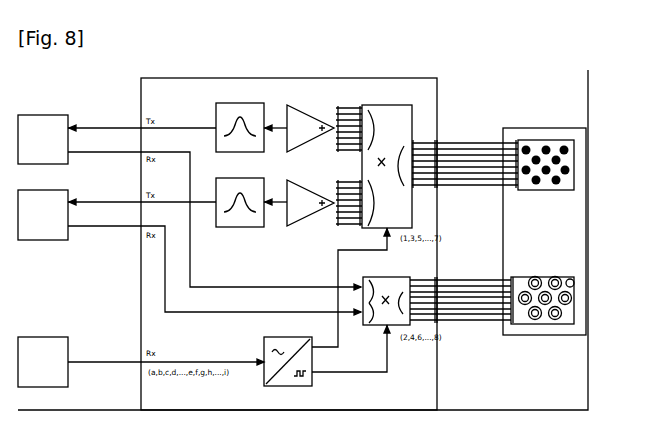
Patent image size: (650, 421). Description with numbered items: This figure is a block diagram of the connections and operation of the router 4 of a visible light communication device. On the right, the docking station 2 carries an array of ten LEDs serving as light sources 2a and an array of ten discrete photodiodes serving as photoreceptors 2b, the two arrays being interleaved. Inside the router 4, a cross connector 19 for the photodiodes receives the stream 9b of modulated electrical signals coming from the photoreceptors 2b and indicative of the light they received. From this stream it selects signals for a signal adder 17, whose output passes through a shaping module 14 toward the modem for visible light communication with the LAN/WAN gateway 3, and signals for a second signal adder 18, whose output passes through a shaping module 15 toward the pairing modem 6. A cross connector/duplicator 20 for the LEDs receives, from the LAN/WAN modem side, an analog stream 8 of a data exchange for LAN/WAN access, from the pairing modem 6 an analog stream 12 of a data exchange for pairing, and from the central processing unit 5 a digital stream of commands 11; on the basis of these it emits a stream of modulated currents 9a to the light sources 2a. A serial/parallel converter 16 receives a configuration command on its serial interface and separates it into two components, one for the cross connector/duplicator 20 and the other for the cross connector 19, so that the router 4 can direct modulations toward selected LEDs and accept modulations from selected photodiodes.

The docking station 2 is at (536, 128).
The light sources 2a is at (536, 277).
The photoreceptors 2b is at (537, 190).
The network gateway 3 is at (30, 114).
The router 4 is at (141, 302).
The central processing unit 5 is at (28, 336).
The modem 6 is at (28, 241).
The analog stream 8 is at (137, 152).
The stream of modulated currents 9a is at (441, 276).
The stream of modulated electrical signals 9b is at (441, 142).
The digital stream of commands 11 is at (80, 360).
The analog stream 12 is at (138, 224).
The shaping module 14 is at (237, 153).
The shaping module 15 is at (237, 228).
The serial/parallel converter 16 is at (282, 336).
The signal adder 17 is at (288, 154).
The signal adder 18 is at (318, 227).
The cross connector 19 is at (374, 231).
The cross connector/duplicator 20 is at (395, 277).